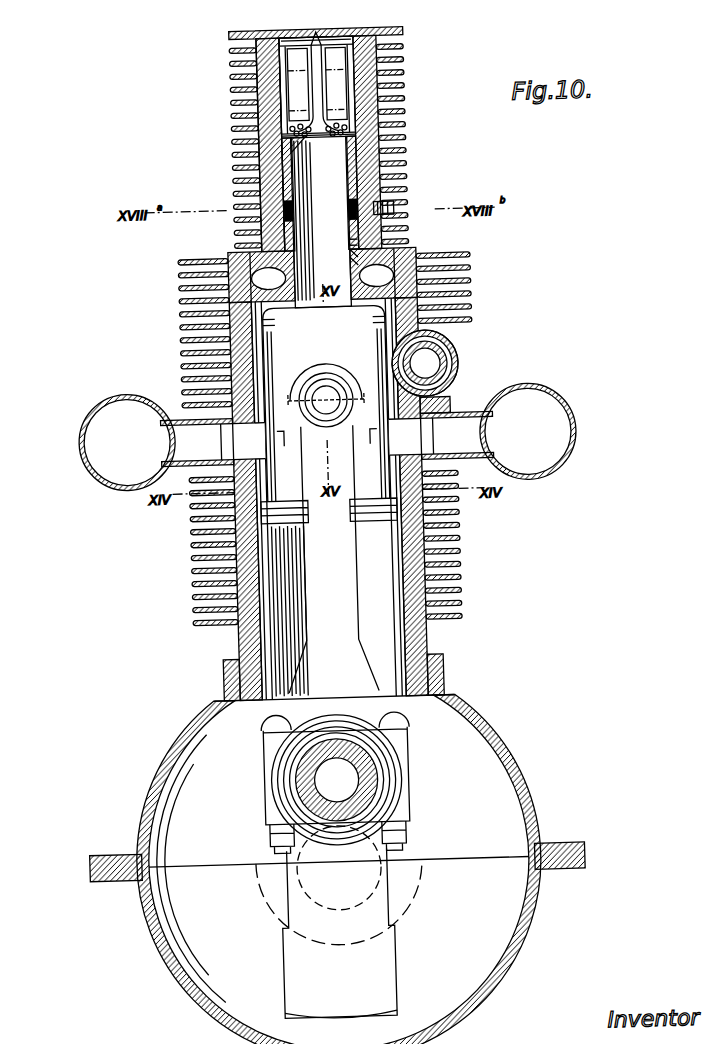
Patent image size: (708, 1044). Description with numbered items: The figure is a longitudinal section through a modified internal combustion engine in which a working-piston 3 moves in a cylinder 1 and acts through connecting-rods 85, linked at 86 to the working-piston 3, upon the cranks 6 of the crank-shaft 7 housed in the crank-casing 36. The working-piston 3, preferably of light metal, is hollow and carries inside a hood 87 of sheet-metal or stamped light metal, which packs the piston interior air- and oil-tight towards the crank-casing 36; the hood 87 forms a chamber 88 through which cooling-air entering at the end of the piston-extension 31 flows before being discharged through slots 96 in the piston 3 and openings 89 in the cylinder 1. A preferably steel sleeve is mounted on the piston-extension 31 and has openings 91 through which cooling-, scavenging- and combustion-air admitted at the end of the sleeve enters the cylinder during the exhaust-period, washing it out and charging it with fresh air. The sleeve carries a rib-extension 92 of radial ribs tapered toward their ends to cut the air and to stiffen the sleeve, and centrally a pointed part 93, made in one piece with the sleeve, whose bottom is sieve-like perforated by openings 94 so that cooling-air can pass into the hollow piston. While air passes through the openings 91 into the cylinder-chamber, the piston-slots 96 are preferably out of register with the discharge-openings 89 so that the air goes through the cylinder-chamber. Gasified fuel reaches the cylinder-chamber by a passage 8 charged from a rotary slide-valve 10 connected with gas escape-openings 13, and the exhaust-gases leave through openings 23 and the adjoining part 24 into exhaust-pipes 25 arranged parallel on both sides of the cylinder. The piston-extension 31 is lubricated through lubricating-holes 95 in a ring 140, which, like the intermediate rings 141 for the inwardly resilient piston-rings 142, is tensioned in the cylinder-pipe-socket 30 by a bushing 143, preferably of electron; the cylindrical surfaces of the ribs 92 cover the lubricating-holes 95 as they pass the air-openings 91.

The cylinder 1 is at (422, 632).
The working-piston 3 is at (430, 268).
The cranks 6 is at (340, 771).
The crank-shaft 7 is at (372, 892).
The passage 8 is at (376, 350).
The rotary slide-valve 10 is at (440, 364).
The gas escape-openings 13 is at (455, 342).
The openings 23 is at (200, 416).
The tube 24 is at (216, 441).
The exhaust-pipes 25 is at (84, 462).
The cylinder-pipe-socket 30 is at (388, 86).
The piston-extension 31 is at (270, 192).
The crank-casing 36 is at (526, 794).
The connecting-rods 85 is at (353, 636).
The link 86 is at (346, 424).
The hood 87 is at (310, 367).
The chamber 88 is at (232, 316).
The openings 89 is at (272, 490).
The openings 91 is at (360, 126).
The rib-extension 92 is at (350, 45).
The pointed part 93 is at (318, 45).
The openings 94 is at (342, 150).
The lubricating-holes 95 is at (289, 216).
The slots 96 is at (232, 352).
The ring 140 is at (399, 208).
The intermediate rings 141 is at (334, 262).
The piston-rings 142 is at (362, 244).
The bushing 143 is at (266, 86).